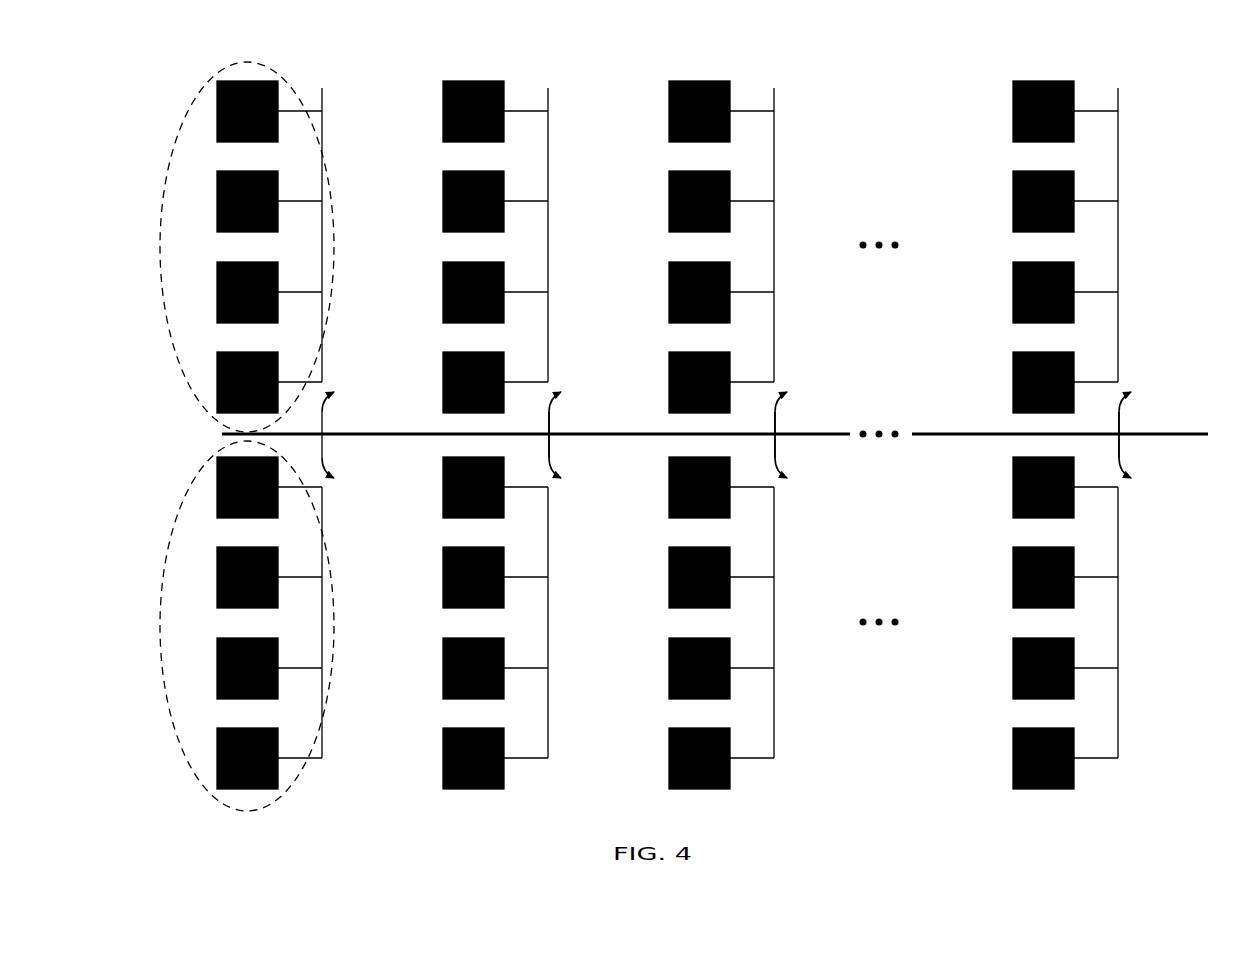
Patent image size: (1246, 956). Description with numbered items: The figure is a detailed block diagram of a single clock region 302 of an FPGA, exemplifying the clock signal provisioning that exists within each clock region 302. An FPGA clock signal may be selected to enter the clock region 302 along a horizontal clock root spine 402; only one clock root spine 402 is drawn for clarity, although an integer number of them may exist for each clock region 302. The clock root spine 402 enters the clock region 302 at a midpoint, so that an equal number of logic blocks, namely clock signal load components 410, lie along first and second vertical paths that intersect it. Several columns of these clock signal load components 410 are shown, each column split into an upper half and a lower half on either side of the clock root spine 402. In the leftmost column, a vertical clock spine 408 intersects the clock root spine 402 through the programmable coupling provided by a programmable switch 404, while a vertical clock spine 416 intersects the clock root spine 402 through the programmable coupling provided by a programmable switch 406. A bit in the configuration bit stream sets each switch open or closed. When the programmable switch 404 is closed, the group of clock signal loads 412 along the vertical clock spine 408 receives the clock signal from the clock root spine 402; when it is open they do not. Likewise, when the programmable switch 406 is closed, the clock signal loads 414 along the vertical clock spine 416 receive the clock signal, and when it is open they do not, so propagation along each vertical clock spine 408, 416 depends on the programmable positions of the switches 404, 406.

The clock region 302 is at (1153, 115).
The clock root spine 402 is at (829, 430).
The programmable switch 404 is at (328, 402).
The programmable switch 406 is at (332, 466).
The vertical clock spine 408 is at (323, 125).
The clock signal load component 410 is at (217, 102).
The clock signal loads 412 is at (165, 308).
The clock signal loads 414 is at (172, 705).
The vertical clock spine 416 is at (322, 752).